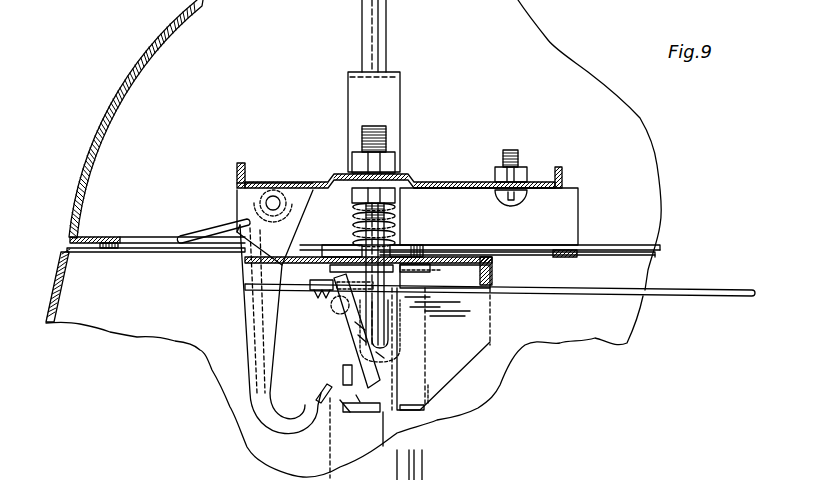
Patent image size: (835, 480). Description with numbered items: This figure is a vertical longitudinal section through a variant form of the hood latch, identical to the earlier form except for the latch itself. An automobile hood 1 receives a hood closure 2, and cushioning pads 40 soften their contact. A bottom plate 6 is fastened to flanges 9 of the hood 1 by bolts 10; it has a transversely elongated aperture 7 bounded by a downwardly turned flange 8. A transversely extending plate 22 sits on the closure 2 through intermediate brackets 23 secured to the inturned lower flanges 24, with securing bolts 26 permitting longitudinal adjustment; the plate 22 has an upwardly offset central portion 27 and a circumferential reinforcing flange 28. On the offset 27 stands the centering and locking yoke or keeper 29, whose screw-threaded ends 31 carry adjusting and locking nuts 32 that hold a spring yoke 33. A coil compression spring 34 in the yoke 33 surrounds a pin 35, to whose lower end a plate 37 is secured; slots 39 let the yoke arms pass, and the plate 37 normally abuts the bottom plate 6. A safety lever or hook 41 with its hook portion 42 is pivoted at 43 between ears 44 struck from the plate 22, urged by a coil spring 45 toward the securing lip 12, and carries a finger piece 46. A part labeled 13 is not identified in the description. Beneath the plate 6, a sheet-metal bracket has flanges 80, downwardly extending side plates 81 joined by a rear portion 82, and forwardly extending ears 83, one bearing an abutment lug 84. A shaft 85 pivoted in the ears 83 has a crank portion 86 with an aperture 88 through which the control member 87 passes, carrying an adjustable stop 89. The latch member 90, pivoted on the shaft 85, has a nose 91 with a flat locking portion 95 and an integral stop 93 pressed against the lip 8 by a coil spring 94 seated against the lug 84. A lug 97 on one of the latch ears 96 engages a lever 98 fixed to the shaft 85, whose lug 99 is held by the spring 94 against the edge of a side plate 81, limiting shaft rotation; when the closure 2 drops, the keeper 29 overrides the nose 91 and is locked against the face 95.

The automobile hood 1 is at (57, 291).
The hood closure 2 is at (146, 48).
The bottom plate 6 is at (484, 246).
The transversely elongated aperture 7 is at (326, 252).
The downwardly turned flange 8 is at (330, 269).
The flanges 9 is at (108, 253).
The bolts 10 is at (340, 466).
The securing lip 12 is at (252, 268).
The flange 13 is at (493, 273).
The transversely extending plate 22 is at (442, 181).
The intermediate brackets 23 is at (572, 219).
The inturned lower edges or flanges 24 is at (110, 237).
The securing bolts 26 is at (510, 150).
The upwardly offset central portion 27 is at (405, 175).
The circumferential reinforcing flange 28 is at (236, 168).
The combined centering and locking yoke or keeper 29 is at (373, 352).
The screw-threaded upper ends 31 is at (378, 128).
The adjusting and locking nuts 32 is at (396, 156).
The spring yoke 33 is at (392, 88).
The coil compression spring 34 is at (396, 212).
The pin 35 is at (387, 22).
The plate 37 is at (398, 247).
The slots 39 is at (356, 250).
The pads or cushioning members 40 is at (72, 241).
The lever or hook 41 is at (249, 362).
The latching or hook portion 42 is at (316, 396).
The pivot 43 is at (270, 185).
The ears 44 is at (289, 187).
The coil spring 45 is at (283, 204).
The finger or handle piece 46 is at (193, 232).
The flanges 80 is at (455, 253).
The side plates 81 is at (466, 350).
The rear connecting portion 82 is at (491, 307).
The forwardly extending ear 83 is at (370, 413).
The offset lug or abutment portion 84 is at (345, 373).
The shaft 85 is at (390, 371).
The offset or crank portion 86 is at (364, 340).
The longitudinal extending control member 87 is at (683, 290).
The aperture 88 is at (338, 300).
The adjustable stop 89 is at (316, 286).
The latch member 90 is at (380, 357).
The nose 91 is at (345, 312).
The stop 93 is at (402, 276).
The coil spring 94 is at (383, 447).
The flat locking portion 95 is at (362, 327).
The ears 96 is at (356, 397).
The offset or lug 97 is at (350, 413).
The lever 98 is at (429, 395).
The lug 99 is at (425, 408).